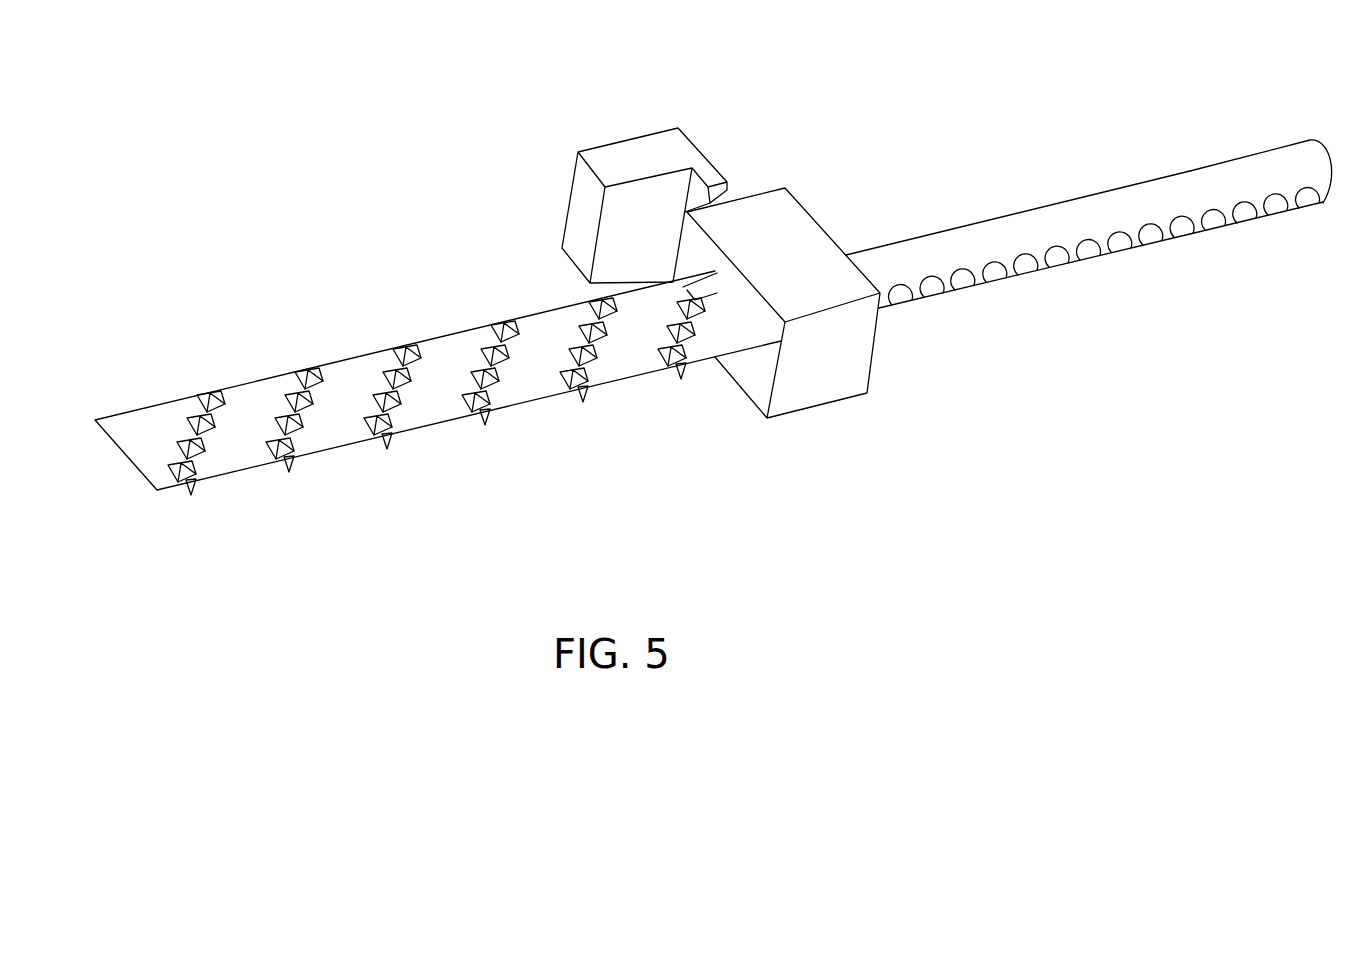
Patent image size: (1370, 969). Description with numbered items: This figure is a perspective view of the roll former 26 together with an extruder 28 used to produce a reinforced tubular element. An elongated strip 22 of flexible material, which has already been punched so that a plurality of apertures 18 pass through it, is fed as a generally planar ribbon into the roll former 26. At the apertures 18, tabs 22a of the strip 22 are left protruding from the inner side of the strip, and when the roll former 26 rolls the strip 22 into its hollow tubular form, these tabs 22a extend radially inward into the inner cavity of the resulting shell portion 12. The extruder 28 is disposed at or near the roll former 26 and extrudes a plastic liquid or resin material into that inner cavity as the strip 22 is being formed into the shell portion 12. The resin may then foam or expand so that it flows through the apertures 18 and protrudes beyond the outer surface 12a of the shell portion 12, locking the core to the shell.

The shell portion 12 is at (1060, 175).
The outer surface of the shell portion 12a is at (1193, 183).
The apertures 18 is at (305, 373).
The elongated strip 22 is at (377, 333).
The tabs 22a is at (488, 417).
The roll former 26 is at (837, 377).
The extruder 28 is at (618, 232).